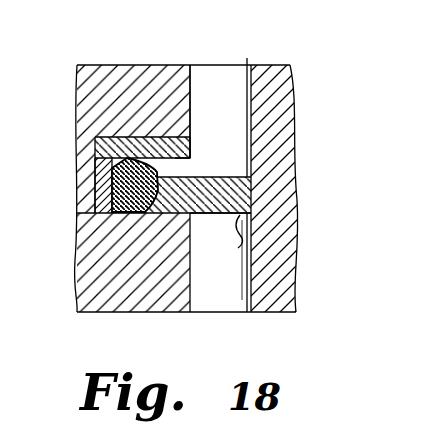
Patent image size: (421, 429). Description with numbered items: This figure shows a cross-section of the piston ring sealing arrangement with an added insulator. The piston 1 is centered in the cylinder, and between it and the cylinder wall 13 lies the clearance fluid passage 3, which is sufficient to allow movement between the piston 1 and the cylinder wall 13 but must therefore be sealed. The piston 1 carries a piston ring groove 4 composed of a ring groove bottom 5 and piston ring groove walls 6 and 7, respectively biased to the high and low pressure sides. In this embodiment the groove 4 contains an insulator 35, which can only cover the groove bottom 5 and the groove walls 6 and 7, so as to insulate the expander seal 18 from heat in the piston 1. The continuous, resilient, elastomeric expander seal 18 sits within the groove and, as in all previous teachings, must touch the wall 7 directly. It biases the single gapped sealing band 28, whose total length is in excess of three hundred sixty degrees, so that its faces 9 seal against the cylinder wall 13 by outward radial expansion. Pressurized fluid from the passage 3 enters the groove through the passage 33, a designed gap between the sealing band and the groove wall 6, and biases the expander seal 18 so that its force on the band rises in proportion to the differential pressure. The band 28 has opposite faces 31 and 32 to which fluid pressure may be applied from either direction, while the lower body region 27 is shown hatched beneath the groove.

The piston 1 is at (110, 82).
The lower housing portion 27 is at (158, 216).
The piston ring groove wall 7 is at (95, 215).
The insulator 35 is at (103, 138).
The ring groove bottom 5 is at (95, 173).
The piston ring groove 4 is at (95, 188).
The face of ring 31 is at (222, 177).
The expander seal 18 is at (118, 214).
The cylinder wall 13 is at (272, 117).
The faces 9 is at (253, 198).
The fluid passage 3 is at (220, 305).
The piston ring groove wall 6 is at (204, 111).
The passage 33 is at (190, 158).
The gapped sealing band 28 is at (203, 215).
The face of ring 32 is at (220, 257).